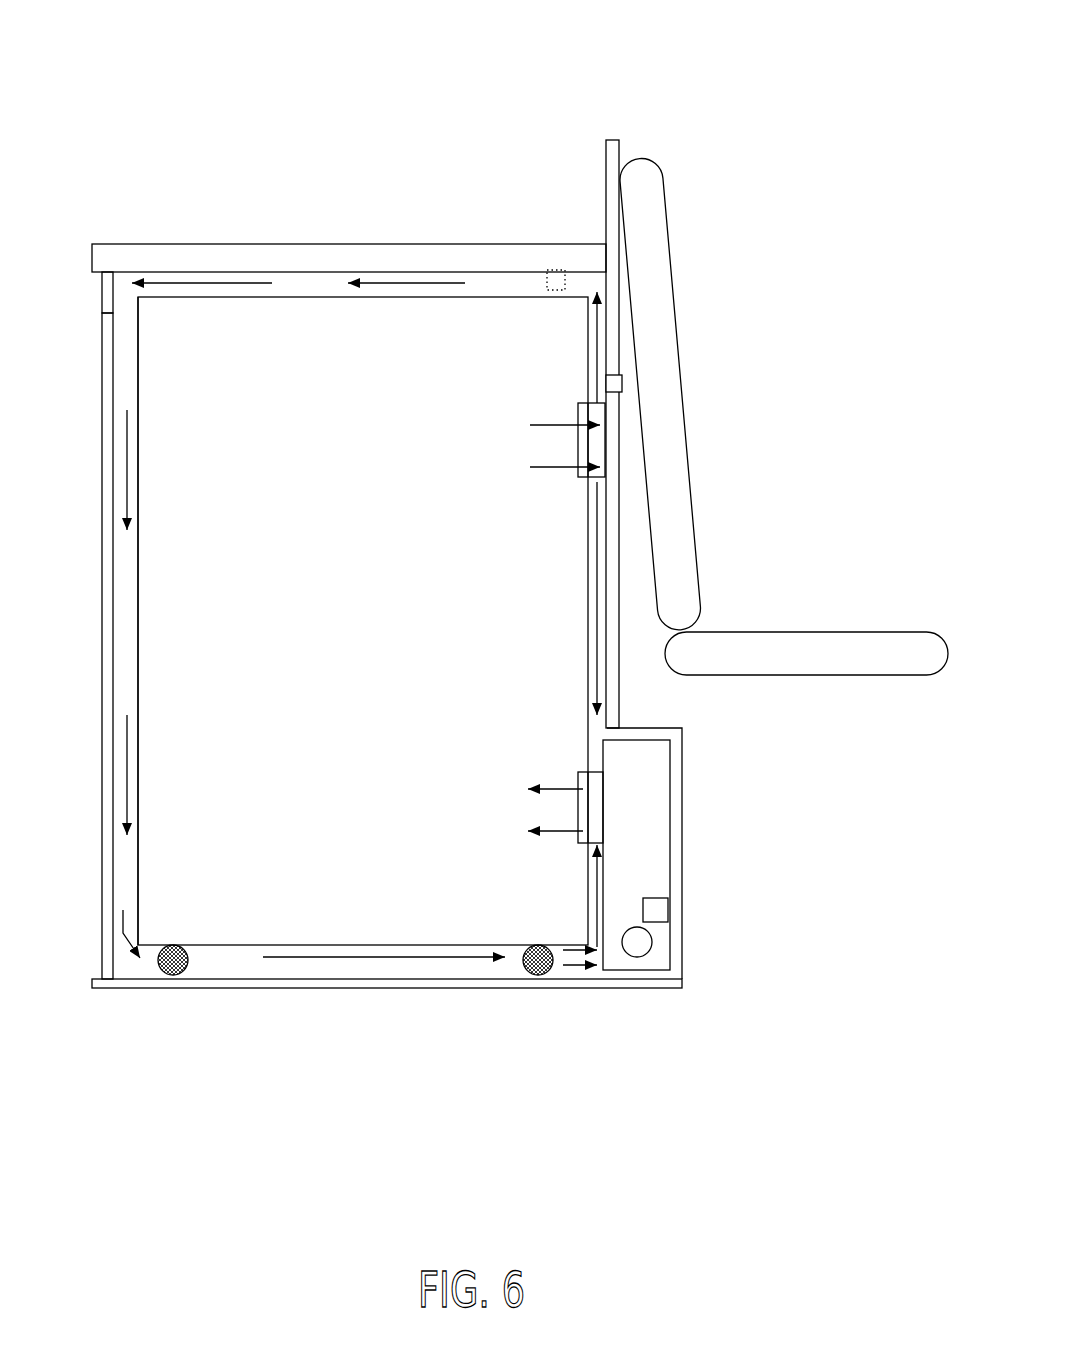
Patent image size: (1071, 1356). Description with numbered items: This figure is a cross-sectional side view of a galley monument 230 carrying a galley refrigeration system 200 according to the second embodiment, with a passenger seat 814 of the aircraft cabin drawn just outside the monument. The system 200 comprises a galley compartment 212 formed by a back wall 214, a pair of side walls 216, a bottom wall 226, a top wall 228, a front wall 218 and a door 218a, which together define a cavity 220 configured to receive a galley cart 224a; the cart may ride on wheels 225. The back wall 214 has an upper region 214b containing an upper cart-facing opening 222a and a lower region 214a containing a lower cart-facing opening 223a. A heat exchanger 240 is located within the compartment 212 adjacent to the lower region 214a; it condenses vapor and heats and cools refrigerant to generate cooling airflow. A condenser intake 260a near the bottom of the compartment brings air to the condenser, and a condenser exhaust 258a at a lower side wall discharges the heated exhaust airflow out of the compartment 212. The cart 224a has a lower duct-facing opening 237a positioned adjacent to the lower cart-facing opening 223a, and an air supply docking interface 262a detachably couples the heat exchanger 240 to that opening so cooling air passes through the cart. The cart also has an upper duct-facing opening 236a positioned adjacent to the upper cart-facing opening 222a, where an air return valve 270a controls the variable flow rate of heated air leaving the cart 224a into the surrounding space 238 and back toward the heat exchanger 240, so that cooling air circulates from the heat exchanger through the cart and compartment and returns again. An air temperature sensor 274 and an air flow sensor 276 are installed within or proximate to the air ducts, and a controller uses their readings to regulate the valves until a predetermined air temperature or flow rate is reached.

The galley refrigeration system 200 is at (459, 71).
The galley compartment 212 is at (308, 198).
The back wall 214 is at (620, 148).
The lower region of the back wall 214a is at (683, 878).
The upper region of the back wall 214b is at (618, 294).
The side walls 216 is at (192, 653).
The front wall 218 is at (101, 294).
The door 218a is at (101, 523).
The cavity 220 is at (319, 429).
The upper cart-facing opening 222a is at (600, 458).
The lower cart-facing opening 223a is at (590, 812).
The galley cart 224a is at (139, 573).
The wheels 225 is at (171, 976).
The bottom wall 226 is at (335, 988).
The top wall 228 is at (273, 256).
The galley monument 230 is at (230, 43).
The upper duct-facing opening 236a is at (586, 450).
The lower duct-facing opening 237a is at (587, 807).
The space 238 is at (209, 963).
The heat exchanger 240 is at (656, 890).
The condenser exhaust 258a is at (637, 942).
The condenser intake 260a is at (660, 910).
The air supply docking interface 262a is at (597, 837).
The air return valve 270a is at (600, 435).
The air temperature sensor 274 is at (622, 386).
The air flow sensor 276 is at (553, 270).
The passenger seats 814 is at (662, 333).